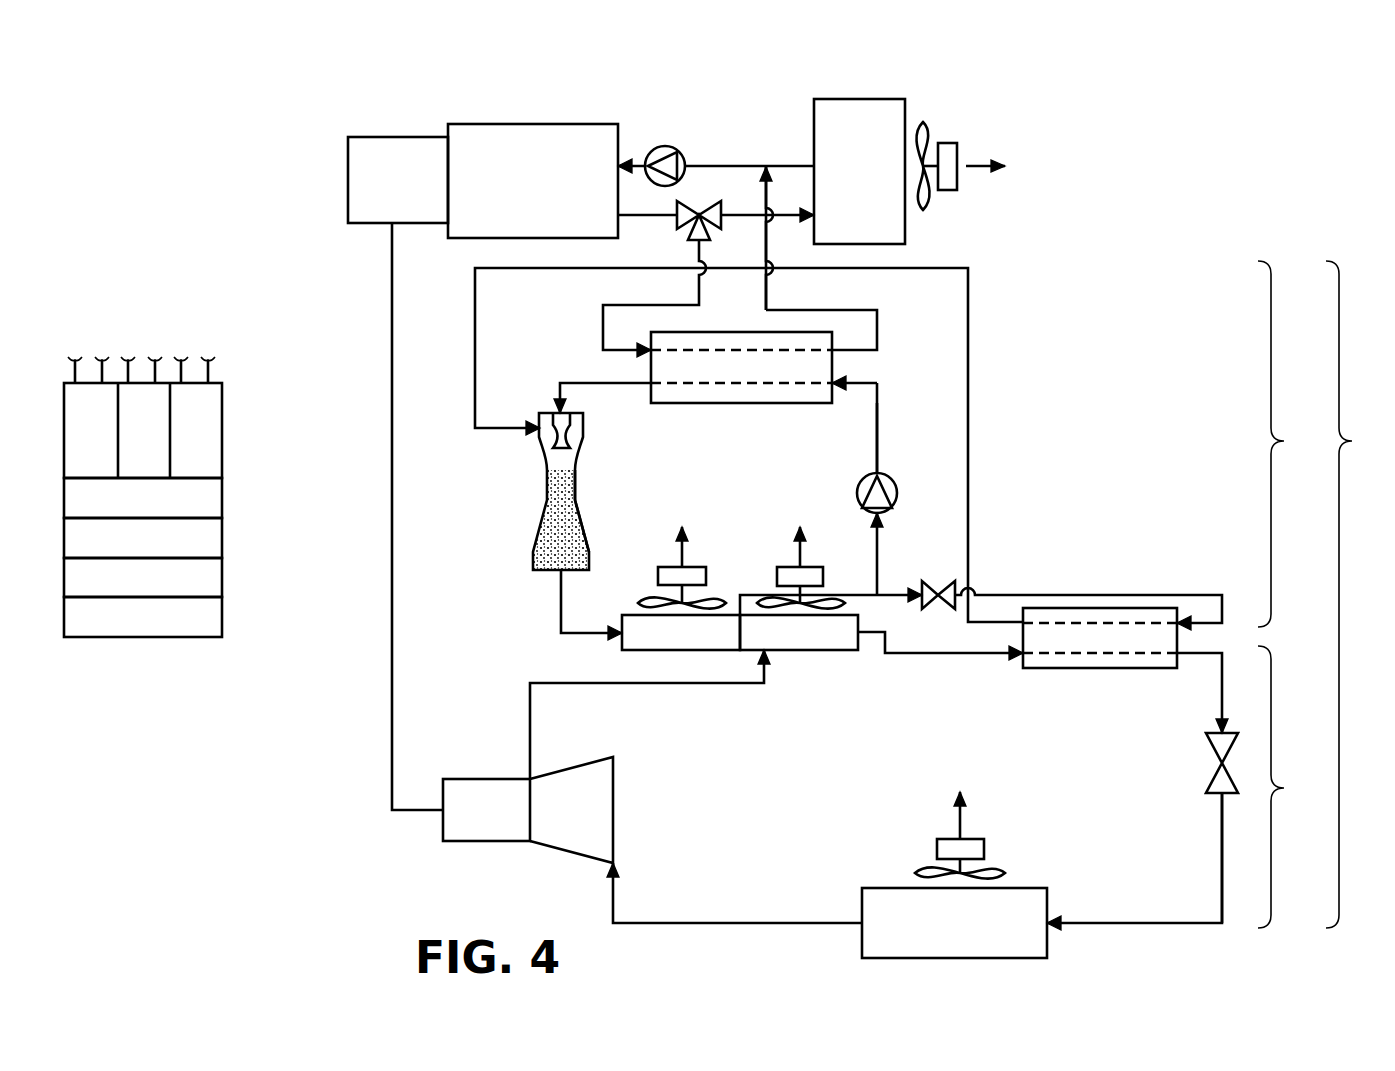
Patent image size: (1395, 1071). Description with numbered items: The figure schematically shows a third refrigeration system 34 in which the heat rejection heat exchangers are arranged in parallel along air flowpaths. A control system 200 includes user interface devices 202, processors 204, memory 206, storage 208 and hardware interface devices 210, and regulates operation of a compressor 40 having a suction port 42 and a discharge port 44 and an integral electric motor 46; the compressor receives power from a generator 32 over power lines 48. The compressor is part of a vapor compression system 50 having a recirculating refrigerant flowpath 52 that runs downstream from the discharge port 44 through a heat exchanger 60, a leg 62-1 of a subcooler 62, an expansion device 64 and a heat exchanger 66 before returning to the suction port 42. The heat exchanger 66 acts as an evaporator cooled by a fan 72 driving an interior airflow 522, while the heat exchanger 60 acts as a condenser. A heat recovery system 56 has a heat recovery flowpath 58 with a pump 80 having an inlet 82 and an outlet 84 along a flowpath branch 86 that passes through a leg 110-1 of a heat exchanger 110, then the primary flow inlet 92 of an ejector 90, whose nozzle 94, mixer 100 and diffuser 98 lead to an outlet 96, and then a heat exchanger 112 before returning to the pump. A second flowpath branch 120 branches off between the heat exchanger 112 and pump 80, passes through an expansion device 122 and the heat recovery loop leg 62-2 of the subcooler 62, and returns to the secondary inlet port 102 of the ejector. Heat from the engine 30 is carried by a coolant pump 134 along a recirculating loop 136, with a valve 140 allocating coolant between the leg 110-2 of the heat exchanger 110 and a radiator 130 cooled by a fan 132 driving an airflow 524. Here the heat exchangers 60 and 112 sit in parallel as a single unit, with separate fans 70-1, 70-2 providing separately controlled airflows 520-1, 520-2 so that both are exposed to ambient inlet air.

The engine 30 is at (519, 171).
The generator 32 is at (384, 187).
The refrigeration system 34 is at (1355, 594).
The compressor 40 is at (633, 812).
The suction port 42 is at (616, 860).
The discharge port 44 is at (533, 778).
The electric motor 46 is at (474, 823).
The power lines 48 is at (396, 516).
The vapor compression system 50 is at (1287, 787).
The refrigerant flowpath 52 is at (1125, 944).
The heat recovery system 56 is at (1287, 444).
The heat recovery flowpath 58 is at (1018, 356).
The heat exchanger 60 is at (803, 668).
The subcooler 62 is at (1141, 681).
The subcooler leg 62-1 is at (1085, 655).
The heat recovery loop leg 62-2 is at (1165, 622).
The expansion device 64 is at (1190, 771).
The heat exchanger 66 is at (1052, 874).
The fan 70-1 is at (826, 570).
The fan 70-2 is at (710, 571).
The fan 72 is at (1010, 855).
The pump 80 is at (903, 480).
The pump inlet 82 is at (885, 515).
The pump outlet 84 is at (877, 490).
The flowpath branch 86 is at (880, 370).
The ejector 90 is at (573, 492).
The primary flow inlet 92 is at (562, 410).
The nozzle 94 is at (573, 434).
The ejector outlet 96 is at (562, 572).
The diffuser 98 is at (592, 532).
The mixer 100 is at (586, 487).
The secondary inlet port 102 is at (537, 424).
The heat exchanger 110 is at (797, 316).
The heat exchanger leg 110-1 is at (690, 383).
The heat exchanger leg 110-2 is at (718, 350).
The heat exchanger 112 is at (615, 647).
The flowpath branch 120 is at (1070, 576).
The expansion device 122 is at (941, 586).
The radiator 130 is at (838, 162).
The fan 132 is at (974, 131).
The coolant pump 134 is at (673, 145).
The recirculating loop 136 is at (709, 156).
The valve 140 is at (706, 196).
The control system 200 is at (196, 497).
The user interface devices 202 is at (124, 631).
The processors 204 is at (124, 591).
The memory 206 is at (124, 552).
The storage 208 is at (124, 512).
The hardware interface devices 210 is at (233, 383).
The airflow 520-1 is at (800, 540).
The airflow 520-2 is at (686, 546).
The airflow 522 is at (968, 818).
The airflow 524 is at (978, 170).